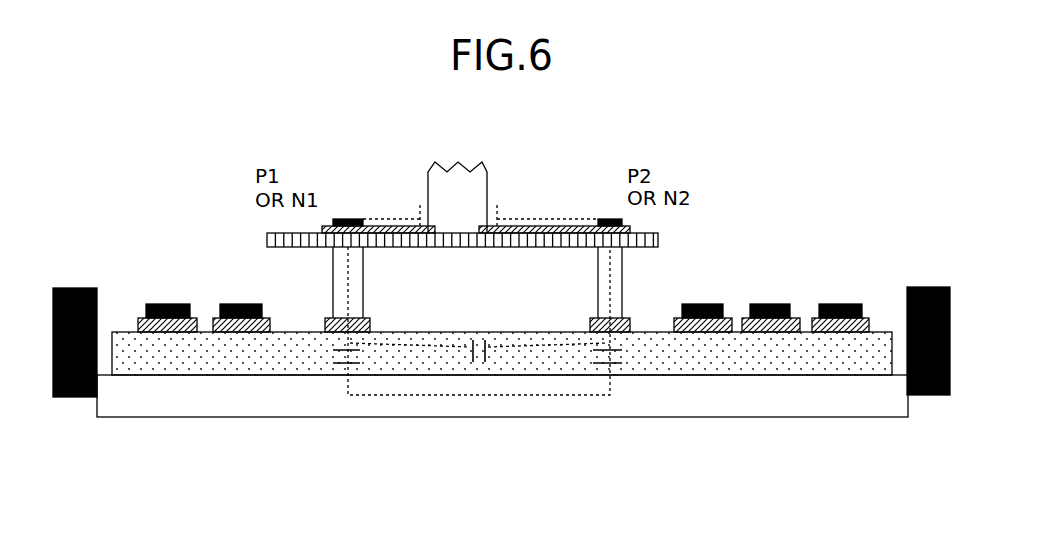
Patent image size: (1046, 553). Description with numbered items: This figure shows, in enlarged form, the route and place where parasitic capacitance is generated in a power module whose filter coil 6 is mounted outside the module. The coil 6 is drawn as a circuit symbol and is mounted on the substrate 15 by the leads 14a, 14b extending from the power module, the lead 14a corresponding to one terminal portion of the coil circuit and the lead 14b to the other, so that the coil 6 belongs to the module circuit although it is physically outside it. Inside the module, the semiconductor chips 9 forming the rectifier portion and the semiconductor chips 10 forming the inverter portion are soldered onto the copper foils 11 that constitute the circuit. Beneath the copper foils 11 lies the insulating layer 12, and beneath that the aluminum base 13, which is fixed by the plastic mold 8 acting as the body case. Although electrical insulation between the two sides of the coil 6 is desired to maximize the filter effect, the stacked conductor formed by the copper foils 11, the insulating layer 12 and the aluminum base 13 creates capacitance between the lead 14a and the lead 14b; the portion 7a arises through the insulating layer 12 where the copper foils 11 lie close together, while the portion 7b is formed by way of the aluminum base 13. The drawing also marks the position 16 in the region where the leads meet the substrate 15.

The coil 6 is at (463, 163).
The capacitance 7a is at (480, 363).
The capacitance 7b is at (358, 363).
The plastic mold 8 is at (75, 288).
The semiconductor chips 9 is at (238, 304).
The semiconductor chips 10 is at (840, 304).
The copper foils 11 is at (333, 333).
The insulating layer 12 is at (633, 368).
The aluminum base 13 is at (290, 400).
The lead 14a is at (342, 218).
The lead 14b is at (610, 218).
The substrate 15 is at (530, 248).
The electrodes 16 is at (425, 247).